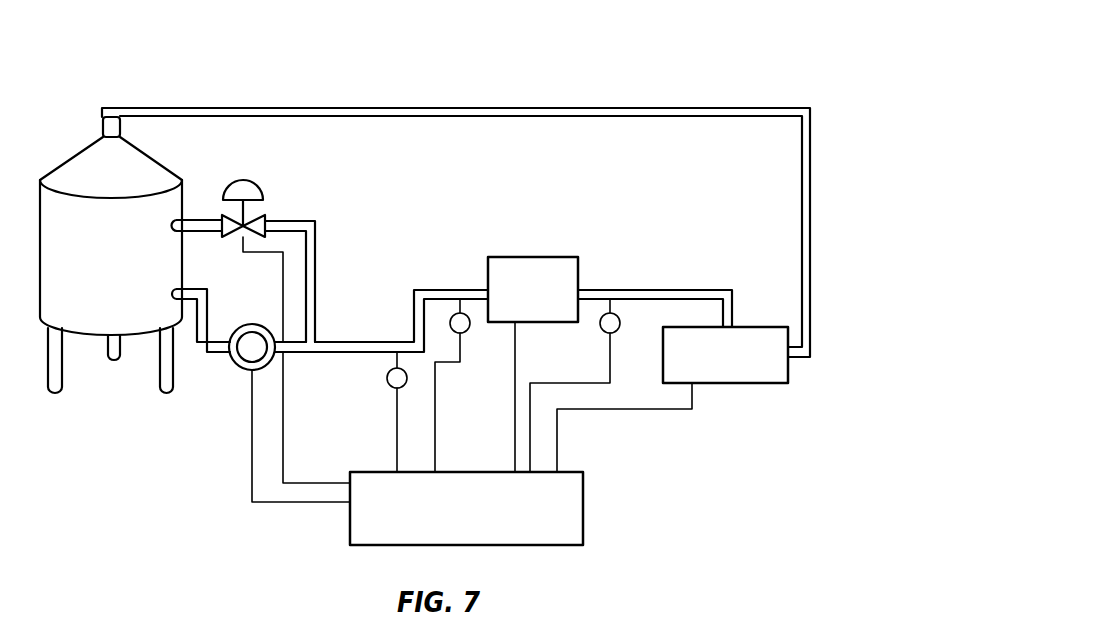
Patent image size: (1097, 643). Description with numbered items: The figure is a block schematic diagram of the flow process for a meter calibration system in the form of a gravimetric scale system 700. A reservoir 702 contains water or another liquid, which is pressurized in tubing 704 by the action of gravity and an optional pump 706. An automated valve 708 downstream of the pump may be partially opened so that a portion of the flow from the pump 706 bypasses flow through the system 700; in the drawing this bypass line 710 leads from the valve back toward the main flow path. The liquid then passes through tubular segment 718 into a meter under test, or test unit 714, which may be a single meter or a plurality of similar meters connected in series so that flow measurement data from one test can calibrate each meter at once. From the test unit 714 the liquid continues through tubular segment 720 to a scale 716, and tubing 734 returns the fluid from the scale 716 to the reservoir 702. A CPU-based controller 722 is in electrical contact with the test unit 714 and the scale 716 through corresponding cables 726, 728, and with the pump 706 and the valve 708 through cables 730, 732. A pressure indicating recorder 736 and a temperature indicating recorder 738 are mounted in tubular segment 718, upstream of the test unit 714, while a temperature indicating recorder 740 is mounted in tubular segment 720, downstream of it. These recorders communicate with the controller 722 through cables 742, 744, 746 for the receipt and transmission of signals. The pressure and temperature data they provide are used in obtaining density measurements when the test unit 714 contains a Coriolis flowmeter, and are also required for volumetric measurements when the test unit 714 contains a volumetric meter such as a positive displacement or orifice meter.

The gravimetric scale system 700 is at (654, 60).
The reservoir 702 is at (150, 168).
The tubing 704 is at (205, 354).
The pump 706 is at (262, 325).
The automated valve 708 is at (250, 189).
The pipe from valve 710 is at (316, 228).
The test unit 714 is at (548, 257).
The scale 716 is at (775, 327).
The tubular segment 718 is at (466, 290).
The tubular segment 720 is at (693, 290).
The CPU-based controller 722 is at (583, 518).
The cable 726 is at (516, 340).
The cable 728 is at (670, 410).
The cable 730 is at (252, 437).
The cable 732 is at (285, 408).
The tubing 734 is at (812, 107).
The pressure indicating recorder 736 is at (387, 378).
The temperature indicating recorder 738 is at (468, 330).
The temperature indicating recorder 740 is at (620, 320).
The cable 742 is at (397, 440).
The cable 744 is at (436, 407).
The cable 746 is at (590, 384).